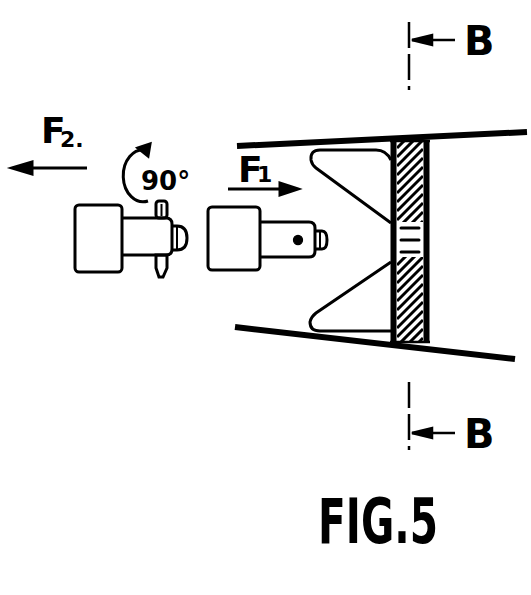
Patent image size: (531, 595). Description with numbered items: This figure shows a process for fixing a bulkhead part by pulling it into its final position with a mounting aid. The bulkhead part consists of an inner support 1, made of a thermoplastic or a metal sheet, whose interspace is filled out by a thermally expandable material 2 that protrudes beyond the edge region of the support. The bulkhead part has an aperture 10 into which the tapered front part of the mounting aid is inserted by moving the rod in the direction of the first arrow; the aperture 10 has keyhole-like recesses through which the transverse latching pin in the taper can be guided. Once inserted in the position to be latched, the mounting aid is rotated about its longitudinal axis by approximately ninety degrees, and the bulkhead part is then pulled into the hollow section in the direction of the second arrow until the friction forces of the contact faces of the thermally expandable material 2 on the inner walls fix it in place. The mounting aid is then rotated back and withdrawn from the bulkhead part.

The inner support 1 is at (429, 190).
The thermally expandable material 2 is at (429, 152).
The aperture 10 is at (429, 243).